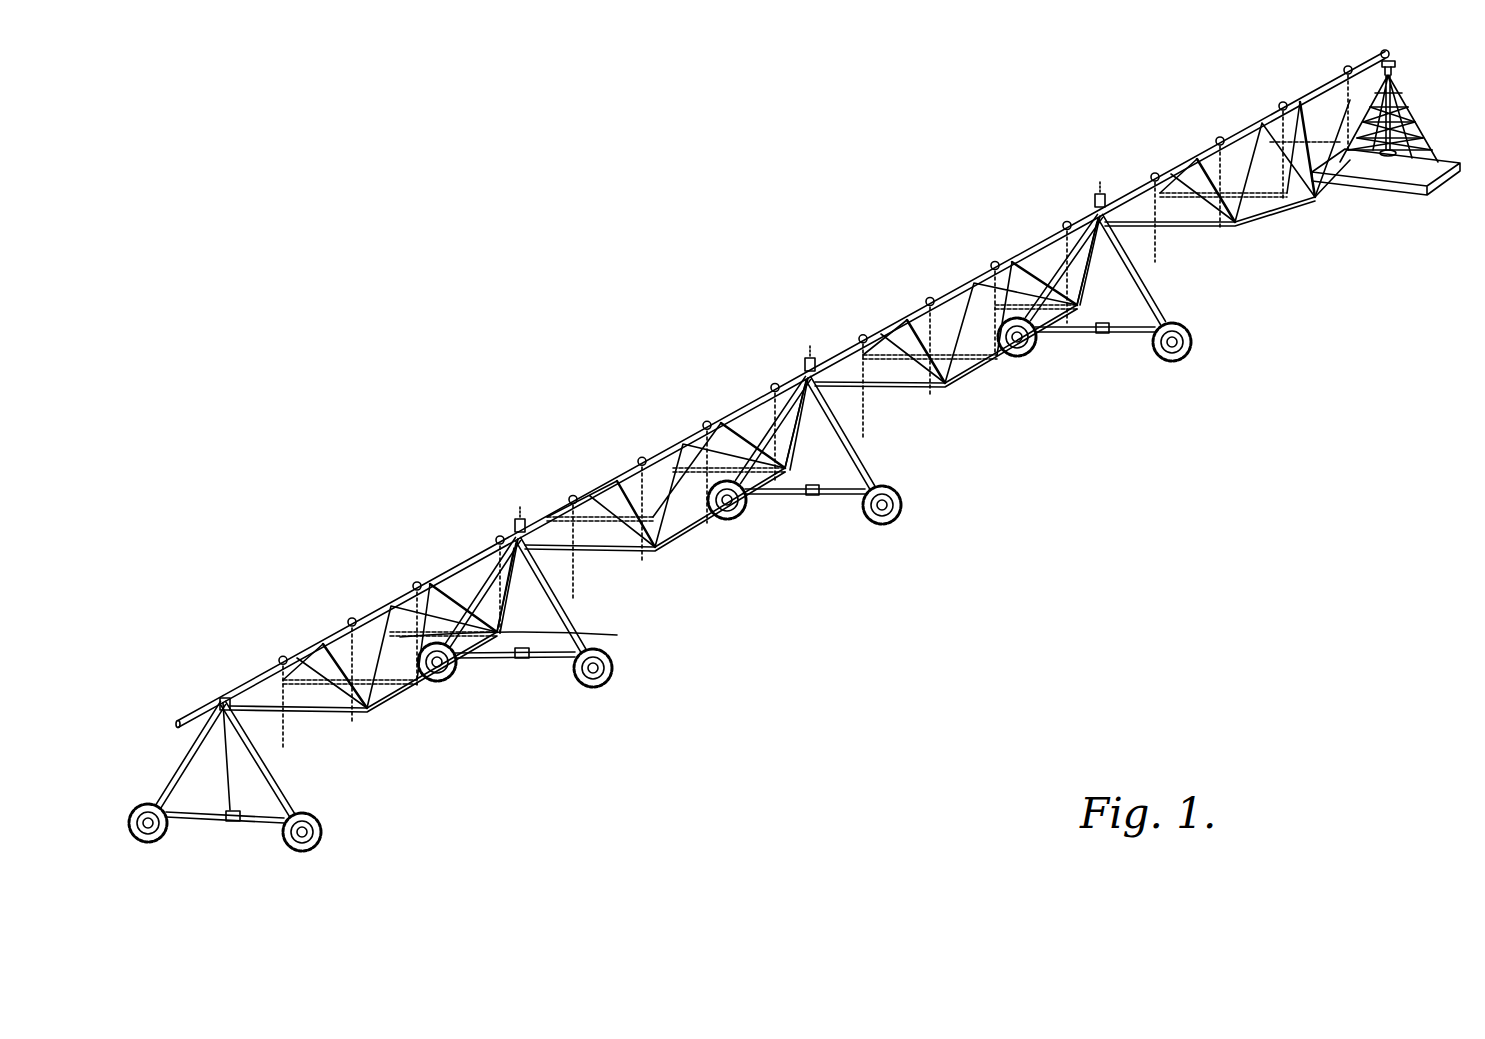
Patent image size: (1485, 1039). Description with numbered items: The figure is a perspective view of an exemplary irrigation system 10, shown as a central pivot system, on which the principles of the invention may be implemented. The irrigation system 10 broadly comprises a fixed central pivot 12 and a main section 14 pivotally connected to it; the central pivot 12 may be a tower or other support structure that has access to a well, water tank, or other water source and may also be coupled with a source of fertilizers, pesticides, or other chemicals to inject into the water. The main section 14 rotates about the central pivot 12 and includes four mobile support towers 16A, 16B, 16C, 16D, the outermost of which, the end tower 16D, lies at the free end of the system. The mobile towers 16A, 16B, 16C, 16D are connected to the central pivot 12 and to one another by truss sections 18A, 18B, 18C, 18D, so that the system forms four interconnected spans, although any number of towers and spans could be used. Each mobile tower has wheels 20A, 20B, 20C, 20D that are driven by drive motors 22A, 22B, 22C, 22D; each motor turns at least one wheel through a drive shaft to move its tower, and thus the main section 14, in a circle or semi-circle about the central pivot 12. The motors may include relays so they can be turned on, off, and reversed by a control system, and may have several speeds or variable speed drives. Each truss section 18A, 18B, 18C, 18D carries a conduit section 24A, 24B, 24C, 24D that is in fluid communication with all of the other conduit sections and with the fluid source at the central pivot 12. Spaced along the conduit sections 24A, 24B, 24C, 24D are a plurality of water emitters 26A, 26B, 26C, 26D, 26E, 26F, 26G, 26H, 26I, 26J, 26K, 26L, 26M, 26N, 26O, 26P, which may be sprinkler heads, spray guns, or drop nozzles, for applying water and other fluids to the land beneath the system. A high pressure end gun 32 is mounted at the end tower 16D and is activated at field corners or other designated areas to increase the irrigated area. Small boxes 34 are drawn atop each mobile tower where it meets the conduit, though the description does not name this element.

The irrigation system 10 is at (626, 240).
The fixed central pivot 12 is at (1447, 84).
The main section 14 is at (906, 189).
The mobile support tower 16A is at (1132, 160).
The mobile support tower 16B is at (827, 335).
The mobile support tower 16C is at (540, 503).
The end tower 16D is at (245, 670).
The truss section 18A is at (1339, 210).
The truss section 18B is at (987, 386).
The truss section 18C is at (760, 548).
The truss section 18D is at (404, 714).
The wheel 20A is at (1035, 350).
The wheel 20B is at (745, 512).
The wheel 20C is at (455, 672).
The wheel 20D is at (150, 845).
The drive motor 22A is at (1105, 336).
The drive motor 22B is at (814, 497).
The drive motor 22C is at (527, 663).
The drive motor 22D is at (233, 825).
The conduit section 24A is at (1320, 96).
The conduit section 24B is at (1022, 256).
The conduit section 24C is at (737, 425).
The conduit section 24D is at (385, 614).
The water emitter 26A is at (1395, 150).
The water emitter 26B is at (1283, 200).
The water emitter 26C is at (1220, 230).
The water emitter 26D is at (1155, 262).
The water emitter 26E is at (1067, 323).
The water emitter 26F is at (995, 355).
The water emitter 26G is at (930, 395).
The water emitter 26H is at (863, 437).
The water emitter 26I is at (775, 480).
The water emitter 26J is at (707, 523).
The water emitter 26K is at (642, 560).
The water emitter 26L is at (573, 598).
The water emitter 26M is at (500, 633).
The water emitter 26N is at (415, 688).
The water emitter 26O is at (352, 722).
The water emitter 26P is at (285, 750).
The end gun 32 is at (178, 720).
The tower control box 34 is at (1100, 192).